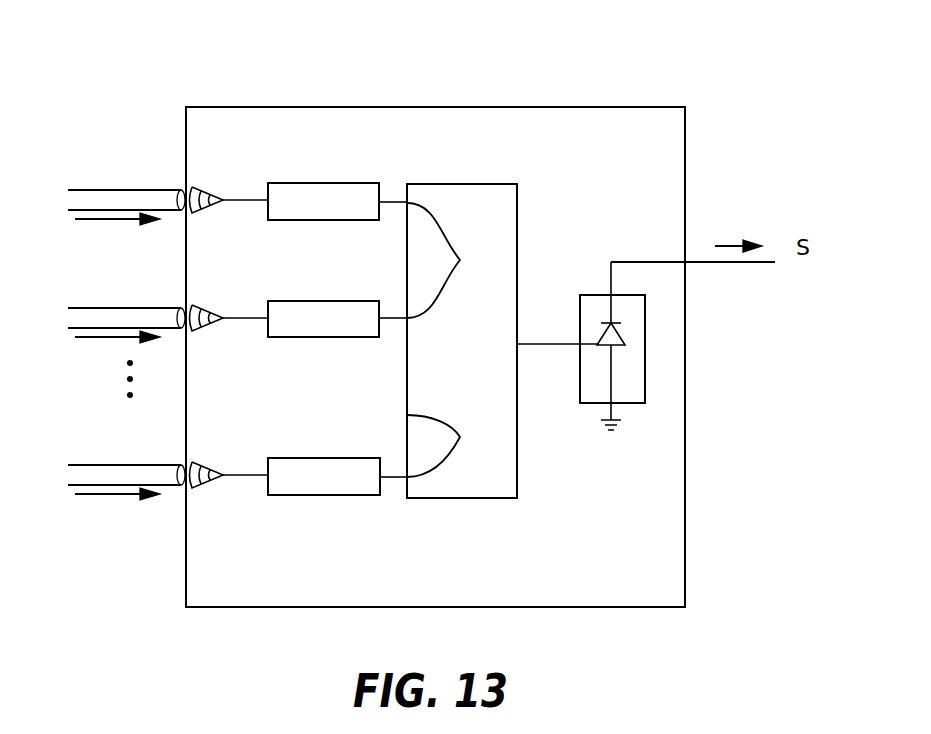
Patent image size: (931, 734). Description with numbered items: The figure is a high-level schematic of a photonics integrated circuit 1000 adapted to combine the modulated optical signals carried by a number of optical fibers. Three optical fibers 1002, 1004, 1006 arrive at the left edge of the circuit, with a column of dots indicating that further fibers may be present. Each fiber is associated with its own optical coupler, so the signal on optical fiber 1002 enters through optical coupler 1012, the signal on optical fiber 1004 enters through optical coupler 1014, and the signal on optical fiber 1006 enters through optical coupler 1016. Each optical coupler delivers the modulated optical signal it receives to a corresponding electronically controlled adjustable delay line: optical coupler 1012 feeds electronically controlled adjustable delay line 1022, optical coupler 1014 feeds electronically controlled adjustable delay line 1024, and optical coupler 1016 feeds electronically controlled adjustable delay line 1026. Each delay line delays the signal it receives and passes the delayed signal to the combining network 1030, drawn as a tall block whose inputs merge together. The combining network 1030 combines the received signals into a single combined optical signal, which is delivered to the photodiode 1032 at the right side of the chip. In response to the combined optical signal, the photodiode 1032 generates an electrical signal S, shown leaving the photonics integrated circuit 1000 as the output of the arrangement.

The photonics integrated circuit 1000 is at (426, 106).
The optical fiber 1002 is at (83, 190).
The optical fiber 1004 is at (83, 307).
The optical fiber 1006 is at (83, 464).
The optical coupler 1012 is at (198, 186).
The optical coupler 1014 is at (198, 304).
The optical coupler 1016 is at (198, 461).
The electronically controlled adjustable delay line 1022 is at (327, 183).
The electronically controlled adjustable delay line 1024 is at (328, 301).
The electronically controlled adjustable delay line 1026 is at (327, 458).
The combining network 1030 is at (468, 498).
The photodiode 1032 is at (633, 337).